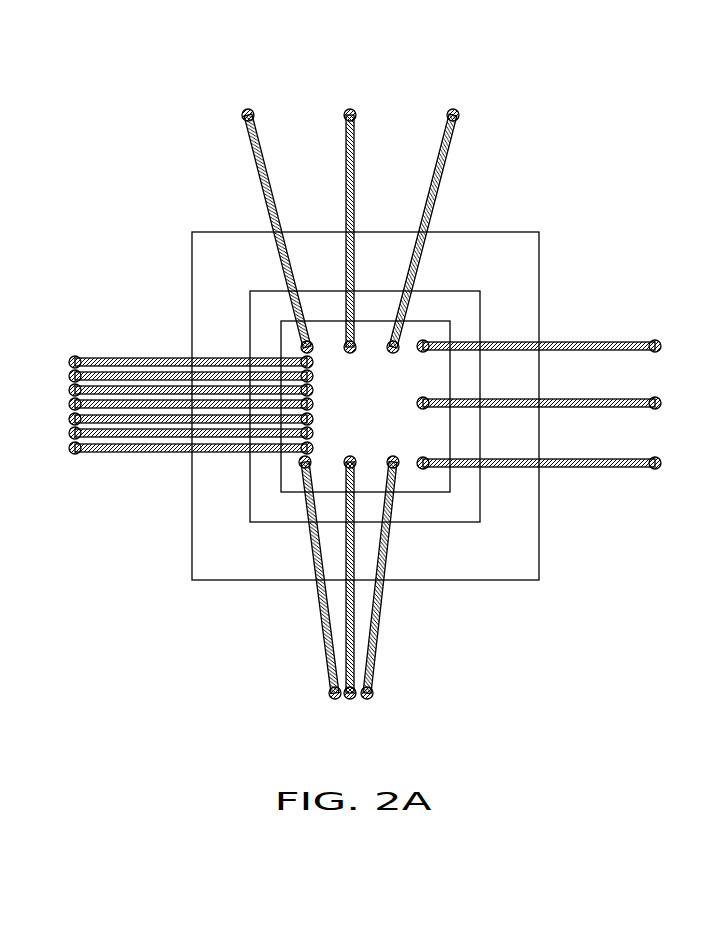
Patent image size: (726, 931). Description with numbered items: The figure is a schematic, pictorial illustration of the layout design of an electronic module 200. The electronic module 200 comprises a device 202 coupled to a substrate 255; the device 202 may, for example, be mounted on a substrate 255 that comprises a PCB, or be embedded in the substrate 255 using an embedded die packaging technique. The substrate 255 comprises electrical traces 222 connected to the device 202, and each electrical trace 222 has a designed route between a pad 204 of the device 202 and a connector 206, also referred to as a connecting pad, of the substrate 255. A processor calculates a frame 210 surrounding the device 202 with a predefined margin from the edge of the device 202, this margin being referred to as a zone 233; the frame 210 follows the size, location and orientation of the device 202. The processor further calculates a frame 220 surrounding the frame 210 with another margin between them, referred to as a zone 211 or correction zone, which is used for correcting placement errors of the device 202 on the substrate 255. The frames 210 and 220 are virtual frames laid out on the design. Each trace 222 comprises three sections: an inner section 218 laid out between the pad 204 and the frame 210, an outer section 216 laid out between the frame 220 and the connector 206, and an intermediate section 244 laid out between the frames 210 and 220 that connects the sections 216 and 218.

The electronic module 200 is at (545, 115).
The device 202 is at (337, 411).
The pad 204 is at (422, 462).
The connector 206 is at (349, 116).
The frame 210 is at (481, 318).
The zone 211 is at (457, 274).
The outer section 216 is at (365, 403).
The inner section 218 is at (280, 345).
The frame 220 is at (497, 232).
The electrical trace 222 is at (612, 405).
The zone 233 is at (427, 311).
The intermediate section 244 is at (248, 616).
The substrate 255 is at (194, 169).